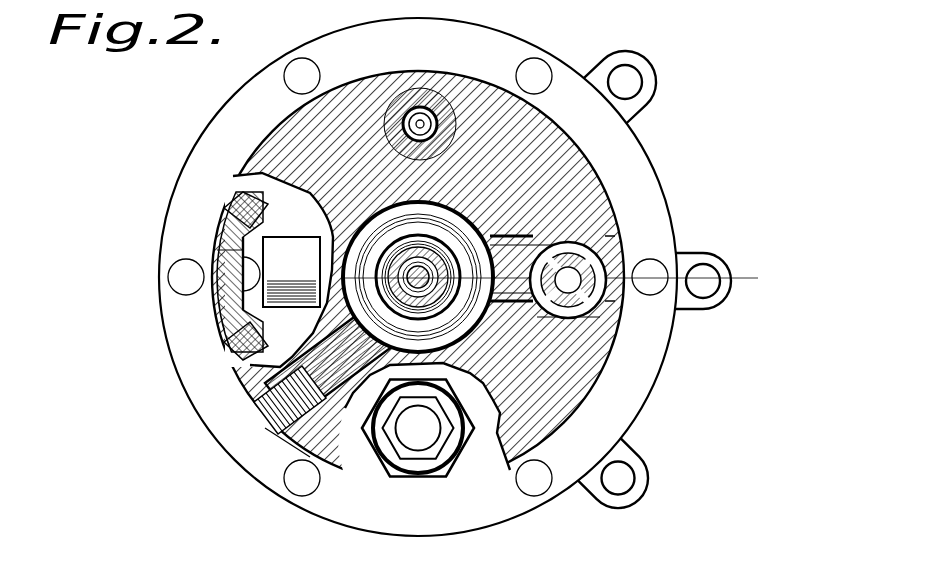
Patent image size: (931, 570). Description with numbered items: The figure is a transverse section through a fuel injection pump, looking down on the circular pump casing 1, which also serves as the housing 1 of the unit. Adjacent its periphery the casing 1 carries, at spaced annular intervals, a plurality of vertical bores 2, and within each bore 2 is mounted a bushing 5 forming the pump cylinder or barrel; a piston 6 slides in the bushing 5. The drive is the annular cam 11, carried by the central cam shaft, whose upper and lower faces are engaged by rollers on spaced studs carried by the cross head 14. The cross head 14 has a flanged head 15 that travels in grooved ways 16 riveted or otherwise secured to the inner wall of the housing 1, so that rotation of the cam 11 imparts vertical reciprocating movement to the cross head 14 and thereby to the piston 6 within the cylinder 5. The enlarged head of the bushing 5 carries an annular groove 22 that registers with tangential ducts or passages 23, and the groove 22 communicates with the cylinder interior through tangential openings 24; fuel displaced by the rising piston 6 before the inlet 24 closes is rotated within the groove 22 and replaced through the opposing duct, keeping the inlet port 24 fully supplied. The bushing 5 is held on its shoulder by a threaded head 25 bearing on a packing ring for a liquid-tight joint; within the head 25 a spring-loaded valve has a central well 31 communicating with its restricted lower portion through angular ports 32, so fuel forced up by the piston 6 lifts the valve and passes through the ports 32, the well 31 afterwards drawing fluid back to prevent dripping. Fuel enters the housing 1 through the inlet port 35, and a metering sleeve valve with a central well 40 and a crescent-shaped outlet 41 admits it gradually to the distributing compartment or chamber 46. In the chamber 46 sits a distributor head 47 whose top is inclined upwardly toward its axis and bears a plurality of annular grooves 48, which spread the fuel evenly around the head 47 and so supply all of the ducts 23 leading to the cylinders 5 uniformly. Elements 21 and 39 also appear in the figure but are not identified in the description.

The pump casing 1 is at (585, 402).
The vertical bores 2 is at (620, 355).
The bushing 5 is at (620, 248).
The piston 6 is at (568, 280).
The annular cam 11 is at (279, 270).
The cross head 14 is at (222, 300).
The flanged head 15 is at (217, 250).
The grooved ways 16 is at (232, 195).
The nut 21 is at (424, 431).
The annular groove 22 is at (600, 232).
The tangential ducts 23 is at (590, 215).
The tangential openings 24 is at (540, 318).
The threaded head 25 is at (413, 92).
The central well 31 is at (438, 108).
The angular ports 32 is at (483, 78).
The inlet port 35 is at (262, 418).
The hub 39 is at (398, 262).
The central well 40 is at (291, 272).
The outlet 41 is at (329, 364).
The distributing compartment 46 is at (280, 462).
The distributor head 47 is at (448, 320).
The annular grooves 48 is at (422, 240).